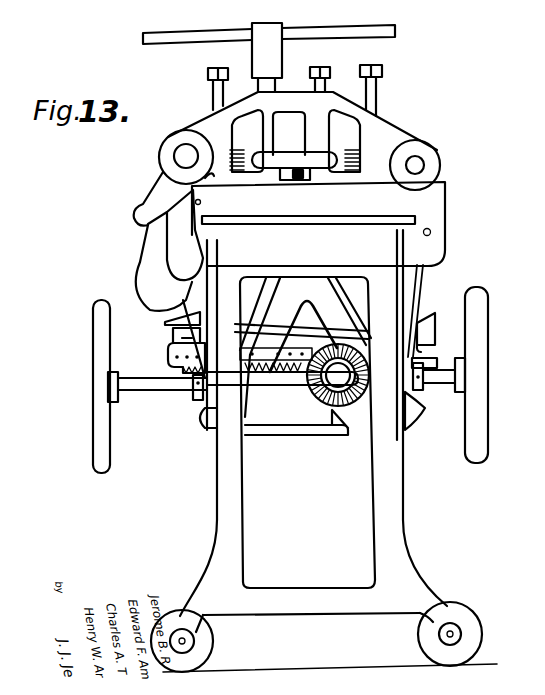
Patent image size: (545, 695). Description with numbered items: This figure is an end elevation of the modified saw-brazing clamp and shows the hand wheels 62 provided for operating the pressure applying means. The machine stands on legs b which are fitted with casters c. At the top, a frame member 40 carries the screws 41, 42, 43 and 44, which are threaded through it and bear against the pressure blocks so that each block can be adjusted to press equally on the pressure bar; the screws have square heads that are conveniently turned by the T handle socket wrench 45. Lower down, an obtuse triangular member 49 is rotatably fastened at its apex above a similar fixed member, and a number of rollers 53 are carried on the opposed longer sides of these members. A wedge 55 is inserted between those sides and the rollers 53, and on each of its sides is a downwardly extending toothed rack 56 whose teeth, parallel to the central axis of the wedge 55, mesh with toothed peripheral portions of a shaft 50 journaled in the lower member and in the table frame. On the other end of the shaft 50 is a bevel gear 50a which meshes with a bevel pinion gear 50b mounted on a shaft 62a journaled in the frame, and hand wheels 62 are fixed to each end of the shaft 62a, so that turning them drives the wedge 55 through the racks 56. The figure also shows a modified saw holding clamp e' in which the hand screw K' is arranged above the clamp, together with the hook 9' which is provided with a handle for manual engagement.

The T handle socket wrench 45 is at (360, 30).
The screw 42 is at (273, 88).
The screw 41 is at (212, 96).
The screw 43 is at (327, 80).
The screw 44 is at (377, 88).
The frame member 40 is at (397, 138).
The hand screw K' is at (294, 153).
The saw holding clamp e' is at (334, 222).
The hook 9' is at (144, 235).
The legs b is at (230, 483).
The casters c is at (162, 623).
The rollers 53 is at (300, 328).
The shaft 50 is at (338, 390).
The shaft 62a is at (285, 380).
The bevel gear 50a is at (360, 417).
The bevel pinion gear 50b is at (385, 390).
The hand wheels 62 is at (92, 330).
The wedge 55 is at (167, 343).
The toothed racks 56 is at (182, 372).
The obtuse triangular member 49 is at (425, 325).